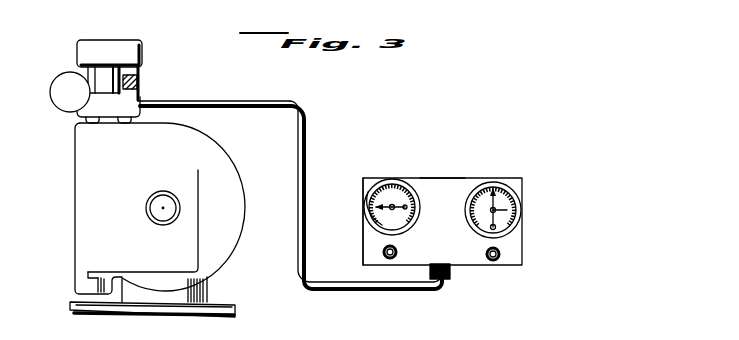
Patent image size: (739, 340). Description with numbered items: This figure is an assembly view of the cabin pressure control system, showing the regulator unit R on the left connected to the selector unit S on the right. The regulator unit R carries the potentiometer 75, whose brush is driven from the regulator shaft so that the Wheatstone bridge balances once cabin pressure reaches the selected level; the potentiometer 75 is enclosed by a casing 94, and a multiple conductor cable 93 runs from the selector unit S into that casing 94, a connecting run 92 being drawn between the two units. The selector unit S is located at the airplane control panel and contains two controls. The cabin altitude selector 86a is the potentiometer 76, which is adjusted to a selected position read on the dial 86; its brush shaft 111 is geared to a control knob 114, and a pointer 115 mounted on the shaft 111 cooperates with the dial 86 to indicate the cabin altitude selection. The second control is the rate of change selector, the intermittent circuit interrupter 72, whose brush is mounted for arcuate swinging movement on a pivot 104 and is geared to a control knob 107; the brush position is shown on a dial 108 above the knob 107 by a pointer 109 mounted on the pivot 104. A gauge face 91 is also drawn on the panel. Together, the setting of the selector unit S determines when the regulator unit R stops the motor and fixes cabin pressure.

The potentiometer 75 is at (72, 47).
The casing 94 is at (131, 47).
The tube horizontal run 92 is at (173, 100).
The multiple conductor cable 93 is at (310, 127).
The regulator unit R is at (211, 140).
The intermittent circuit interrupter 72 is at (524, 245).
The cabin altitude selector potentiometer 76 is at (361, 237).
The selector unit S is at (443, 188).
The dial 86 is at (397, 182).
The cabin altitude selector 86a is at (383, 178).
The pointer 115 is at (373, 198).
The shaft 111 is at (367, 220).
The control knob 114 is at (383, 253).
The right gauge 91 is at (466, 197).
The dial 108 is at (491, 190).
The pointer 109 is at (500, 198).
The pivot 104 is at (497, 210).
The control knob 107 is at (497, 261).